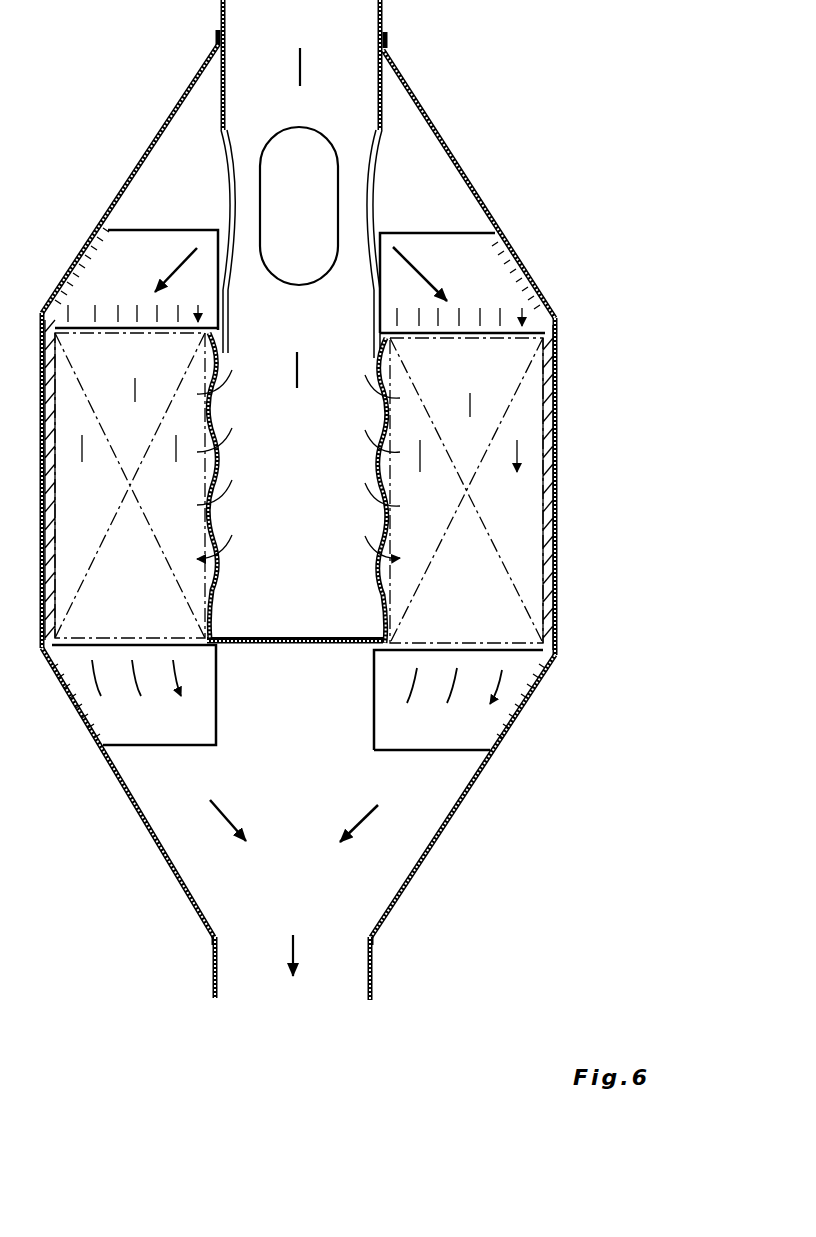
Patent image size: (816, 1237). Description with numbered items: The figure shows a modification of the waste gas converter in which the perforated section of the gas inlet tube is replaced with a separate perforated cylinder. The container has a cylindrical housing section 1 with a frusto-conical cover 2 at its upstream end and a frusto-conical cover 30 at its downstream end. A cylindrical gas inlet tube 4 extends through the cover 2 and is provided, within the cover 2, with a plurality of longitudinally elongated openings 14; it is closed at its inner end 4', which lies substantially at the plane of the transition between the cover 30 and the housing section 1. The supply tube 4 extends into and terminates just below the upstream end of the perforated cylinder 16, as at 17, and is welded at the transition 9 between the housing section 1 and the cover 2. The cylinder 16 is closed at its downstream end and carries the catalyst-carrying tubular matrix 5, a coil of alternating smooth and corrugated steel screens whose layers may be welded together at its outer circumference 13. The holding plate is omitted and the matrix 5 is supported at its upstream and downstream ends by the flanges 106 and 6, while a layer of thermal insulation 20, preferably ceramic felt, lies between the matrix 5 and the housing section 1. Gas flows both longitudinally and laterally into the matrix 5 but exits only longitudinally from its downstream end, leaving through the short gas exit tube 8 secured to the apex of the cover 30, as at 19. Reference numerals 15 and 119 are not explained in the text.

The cylindrical housing section 1 is at (560, 380).
The frusto-conical cover 2 is at (425, 127).
The gas inlet tube 4 is at (341, 65).
The closed downstream end of the tube 4' is at (295, 683).
The tubular matrix 5 is at (522, 511).
The flanges 6 is at (503, 700).
The gas exit tube 8 is at (373, 990).
The transition between housing section and cover 9 is at (566, 326).
The outer circumference of the coil 13 is at (387, 533).
The longitudinally elongated openings 14 is at (312, 168).
The distribution plate 15 is at (525, 276).
The perforated cylinder 16 is at (335, 607).
The termination of gas supply tube in cylinder 17 is at (373, 343).
The securement of exit tube to cover 19 is at (385, 30).
The layer of thermal insulation 20 is at (558, 415).
The frusto-conical cover 30 is at (430, 847).
The supporting flanges 106 is at (475, 265).
The outlet flange 119 is at (373, 942).